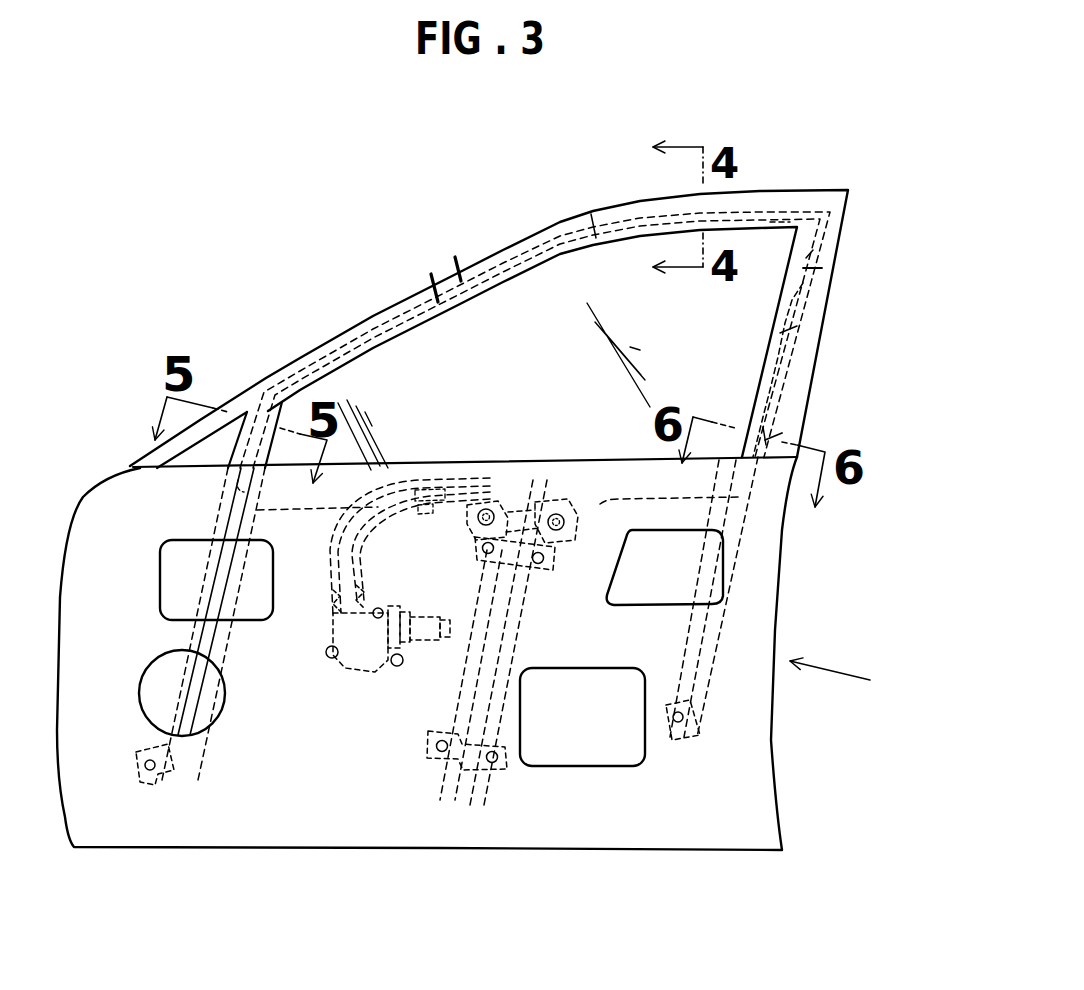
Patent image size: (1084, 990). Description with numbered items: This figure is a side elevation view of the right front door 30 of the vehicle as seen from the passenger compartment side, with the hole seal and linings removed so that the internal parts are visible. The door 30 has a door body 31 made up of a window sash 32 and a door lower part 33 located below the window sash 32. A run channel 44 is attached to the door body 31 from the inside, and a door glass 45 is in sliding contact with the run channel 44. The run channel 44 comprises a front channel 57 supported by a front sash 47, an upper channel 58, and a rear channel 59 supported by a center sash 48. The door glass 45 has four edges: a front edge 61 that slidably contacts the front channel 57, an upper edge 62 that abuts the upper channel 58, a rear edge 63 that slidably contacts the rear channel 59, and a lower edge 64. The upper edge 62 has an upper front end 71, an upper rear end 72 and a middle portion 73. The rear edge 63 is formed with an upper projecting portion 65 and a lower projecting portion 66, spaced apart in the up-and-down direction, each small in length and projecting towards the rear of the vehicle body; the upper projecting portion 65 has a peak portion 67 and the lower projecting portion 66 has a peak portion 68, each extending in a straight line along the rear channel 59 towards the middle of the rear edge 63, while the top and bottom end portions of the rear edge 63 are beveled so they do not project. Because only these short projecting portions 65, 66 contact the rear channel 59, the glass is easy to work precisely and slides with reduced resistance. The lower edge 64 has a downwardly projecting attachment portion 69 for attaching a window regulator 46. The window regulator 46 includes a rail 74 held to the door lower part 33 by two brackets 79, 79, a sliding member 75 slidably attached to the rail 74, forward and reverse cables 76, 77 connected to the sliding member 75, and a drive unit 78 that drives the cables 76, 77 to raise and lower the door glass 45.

The door 30 is at (210, 249).
The door body 31 is at (849, 680).
The window sash 32 is at (503, 250).
The door lower part 33 is at (777, 610).
The run channel 44 is at (371, 315).
The door glass 45 is at (416, 305).
The window regulator 46 is at (423, 705).
The front sash 47 is at (177, 683).
The center sash 48 is at (713, 681).
The front channel 57 is at (236, 556).
The upper channel 58 is at (397, 315).
The rear channel 59 is at (712, 559).
The front edge 61 is at (240, 487).
The upper edge 62 is at (433, 280).
The rear edge 63 is at (782, 333).
The lower edge 64 is at (313, 512).
The upper projecting portion 65 is at (805, 268).
The lower projecting portion 66 is at (767, 438).
The peak portion 67 is at (813, 250).
The peak portion 68 is at (763, 427).
The attachment portion 69 is at (575, 518).
The upper front end 71 is at (286, 392).
The upper rear end 72 is at (778, 222).
The middle portion 73 is at (593, 220).
The rail 74 is at (520, 635).
The sliding member 75 is at (556, 558).
The forward cable 76 is at (398, 485).
The reverse cable 77 is at (460, 492).
The drive unit 78 is at (327, 657).
The brackets 79 is at (553, 572).